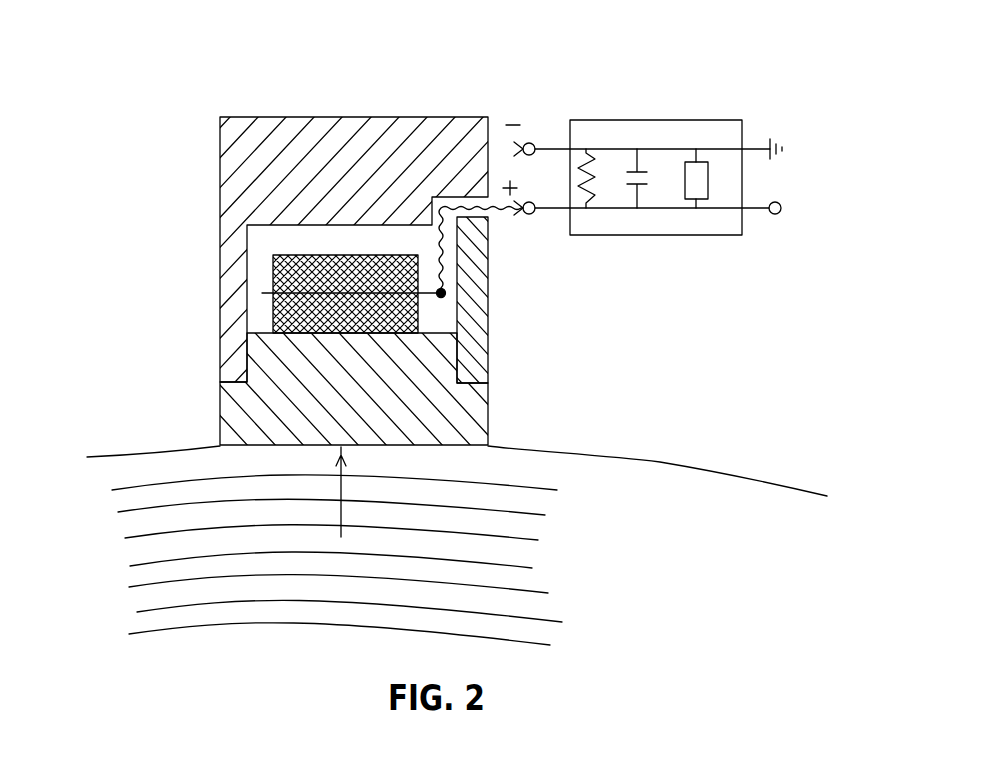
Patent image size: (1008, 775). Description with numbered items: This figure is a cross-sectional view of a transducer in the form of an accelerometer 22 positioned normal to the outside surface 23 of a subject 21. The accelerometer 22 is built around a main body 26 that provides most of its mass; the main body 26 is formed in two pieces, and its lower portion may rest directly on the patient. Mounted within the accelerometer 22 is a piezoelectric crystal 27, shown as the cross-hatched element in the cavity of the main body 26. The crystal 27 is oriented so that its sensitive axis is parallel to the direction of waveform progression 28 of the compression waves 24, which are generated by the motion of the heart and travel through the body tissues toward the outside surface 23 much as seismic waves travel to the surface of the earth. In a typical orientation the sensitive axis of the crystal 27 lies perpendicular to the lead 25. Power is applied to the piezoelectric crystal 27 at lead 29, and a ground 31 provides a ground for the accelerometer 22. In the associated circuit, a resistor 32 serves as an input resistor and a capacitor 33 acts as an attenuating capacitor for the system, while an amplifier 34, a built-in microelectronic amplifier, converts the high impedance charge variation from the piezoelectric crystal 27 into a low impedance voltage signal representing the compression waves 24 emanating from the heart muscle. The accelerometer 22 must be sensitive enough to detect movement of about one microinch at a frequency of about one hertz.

The subject 21 is at (745, 434).
The accelerometer 22 is at (333, 95).
The outside surface 23 is at (587, 452).
The compression waves 24 is at (535, 483).
The lead 25 is at (267, 292).
The main body 26 is at (427, 123).
The piezoelectric crystal 27 is at (283, 257).
The direction of waveform progression 28 is at (342, 510).
The lead 29 is at (755, 207).
The ground 31 is at (752, 146).
The resistor 32 is at (581, 162).
The capacitor 33 is at (640, 160).
The amplifier 34 is at (703, 186).